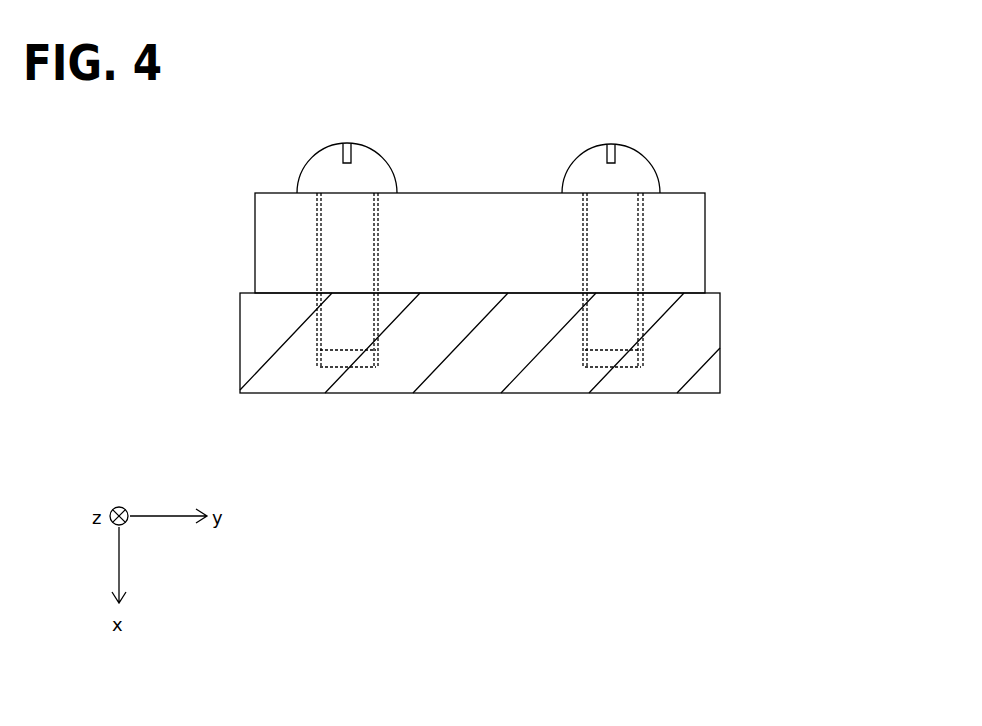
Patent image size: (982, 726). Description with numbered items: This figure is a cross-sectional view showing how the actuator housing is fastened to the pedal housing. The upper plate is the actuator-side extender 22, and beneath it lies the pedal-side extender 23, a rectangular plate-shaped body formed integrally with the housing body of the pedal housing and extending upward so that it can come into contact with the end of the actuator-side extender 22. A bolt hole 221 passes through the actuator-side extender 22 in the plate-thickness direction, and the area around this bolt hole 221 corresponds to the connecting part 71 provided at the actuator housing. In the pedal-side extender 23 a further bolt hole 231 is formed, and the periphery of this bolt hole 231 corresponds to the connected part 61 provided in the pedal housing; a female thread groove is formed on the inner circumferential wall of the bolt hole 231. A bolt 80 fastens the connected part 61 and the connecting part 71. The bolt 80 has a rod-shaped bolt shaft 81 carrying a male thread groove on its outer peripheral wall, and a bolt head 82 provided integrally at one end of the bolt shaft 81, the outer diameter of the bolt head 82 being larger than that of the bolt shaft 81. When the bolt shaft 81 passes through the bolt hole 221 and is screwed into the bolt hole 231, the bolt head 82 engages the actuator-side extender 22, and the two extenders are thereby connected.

The actuator-side extender 22 is at (475, 212).
The bolt hole 221 is at (372, 198).
The pedal-side extender 23 is at (479, 378).
The bolt hole 231 is at (366, 348).
The bolt 80 is at (335, 159).
The bolt head 82 is at (335, 182).
The bolt shaft 81 is at (335, 278).
The connecting part 71 is at (307, 248).
The connected part 61 is at (305, 334).